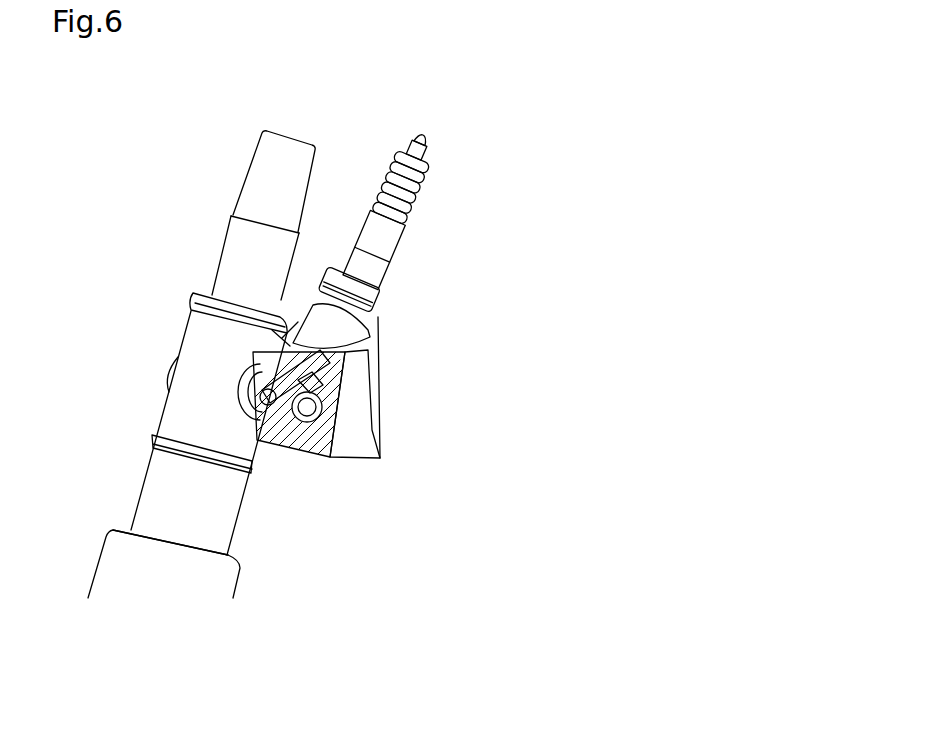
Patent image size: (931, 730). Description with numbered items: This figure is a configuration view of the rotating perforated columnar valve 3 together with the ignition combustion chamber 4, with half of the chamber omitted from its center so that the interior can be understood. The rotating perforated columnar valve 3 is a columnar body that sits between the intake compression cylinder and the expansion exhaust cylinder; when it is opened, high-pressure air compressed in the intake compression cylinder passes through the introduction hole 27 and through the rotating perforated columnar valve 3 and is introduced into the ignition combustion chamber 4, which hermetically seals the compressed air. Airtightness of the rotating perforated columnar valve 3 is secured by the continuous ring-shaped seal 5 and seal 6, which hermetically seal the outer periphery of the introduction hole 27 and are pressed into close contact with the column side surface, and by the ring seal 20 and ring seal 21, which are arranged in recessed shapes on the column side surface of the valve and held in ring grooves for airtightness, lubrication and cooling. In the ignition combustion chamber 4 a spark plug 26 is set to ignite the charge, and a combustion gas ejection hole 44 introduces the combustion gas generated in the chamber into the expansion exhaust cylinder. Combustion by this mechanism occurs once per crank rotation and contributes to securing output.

The rotating perforated columnar valve 3 is at (199, 352).
The ignition combustion chamber 4 is at (323, 420).
The seal 5 is at (156, 372).
The seal 6 is at (260, 425).
The ring seal 20 is at (189, 299).
The ring seal 21 is at (141, 432).
The spark plug 26 is at (405, 145).
The introduction hole 27 is at (281, 405).
The combustion gas ejection hole 44 is at (359, 413).